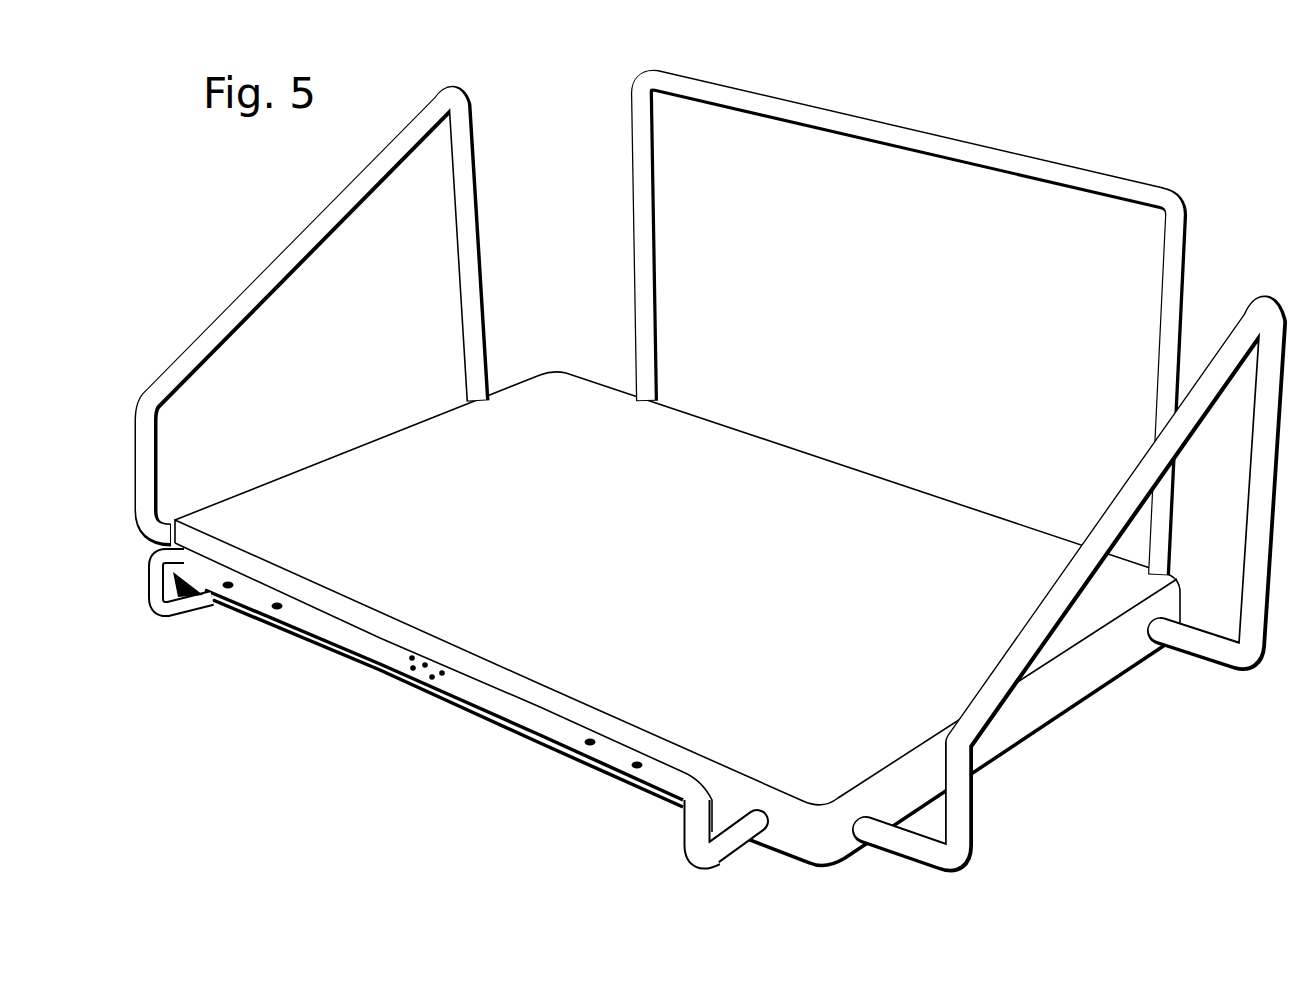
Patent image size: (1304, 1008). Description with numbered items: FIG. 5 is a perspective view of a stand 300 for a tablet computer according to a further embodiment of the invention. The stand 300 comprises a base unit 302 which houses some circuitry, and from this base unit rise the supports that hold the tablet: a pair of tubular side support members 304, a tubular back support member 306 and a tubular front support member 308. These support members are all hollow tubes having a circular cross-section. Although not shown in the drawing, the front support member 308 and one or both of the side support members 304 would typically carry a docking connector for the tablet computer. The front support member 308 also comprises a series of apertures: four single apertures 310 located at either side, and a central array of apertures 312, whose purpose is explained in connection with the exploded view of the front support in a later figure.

The stand 300 is at (1094, 152).
The base unit 302 is at (708, 576).
The side support member 304 is at (284, 258).
The back support member 306 is at (845, 124).
The front support member 308 is at (507, 710).
The single apertures 310 is at (277, 608).
The central array of apertures 312 is at (413, 687).